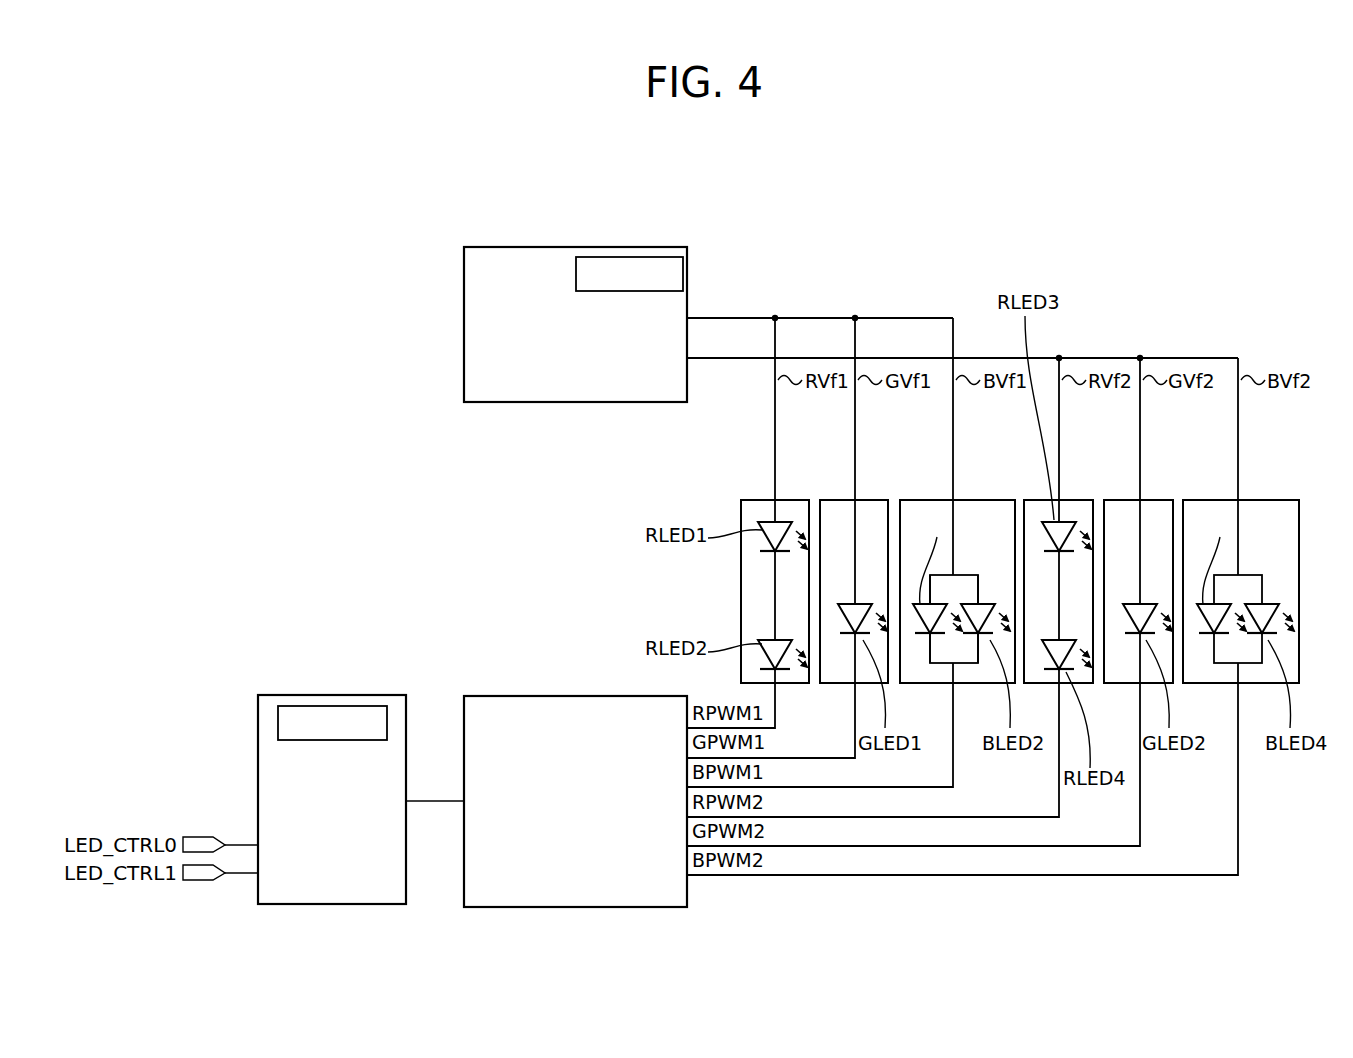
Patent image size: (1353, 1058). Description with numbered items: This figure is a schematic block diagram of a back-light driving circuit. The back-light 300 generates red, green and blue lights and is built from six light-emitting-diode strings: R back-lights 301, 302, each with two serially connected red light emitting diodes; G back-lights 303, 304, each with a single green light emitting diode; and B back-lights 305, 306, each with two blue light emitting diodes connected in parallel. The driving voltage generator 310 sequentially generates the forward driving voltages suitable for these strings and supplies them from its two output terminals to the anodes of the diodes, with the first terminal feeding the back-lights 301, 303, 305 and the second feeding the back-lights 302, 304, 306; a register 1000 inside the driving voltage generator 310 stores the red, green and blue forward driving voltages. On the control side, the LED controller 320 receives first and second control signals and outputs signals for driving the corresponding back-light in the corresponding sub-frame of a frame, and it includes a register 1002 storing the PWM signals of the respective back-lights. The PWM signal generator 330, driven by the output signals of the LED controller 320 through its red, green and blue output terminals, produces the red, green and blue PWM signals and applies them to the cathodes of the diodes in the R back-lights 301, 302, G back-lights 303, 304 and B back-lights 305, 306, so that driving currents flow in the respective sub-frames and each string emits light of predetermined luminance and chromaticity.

The back-light 300 is at (922, 256).
The R back-light 301 is at (790, 500).
The R back-light 302 is at (1082, 500).
The G back-light 303 is at (870, 500).
The G back-light 304 is at (1162, 500).
The B back-light 305 is at (993, 500).
The B back-light 306 is at (1277, 500).
The driving voltage generator 310 is at (464, 343).
The LED controller 320 is at (312, 695).
The PWM signal generator 330 is at (575, 695).
The register 1000 is at (628, 257).
The register 1002 is at (358, 706).